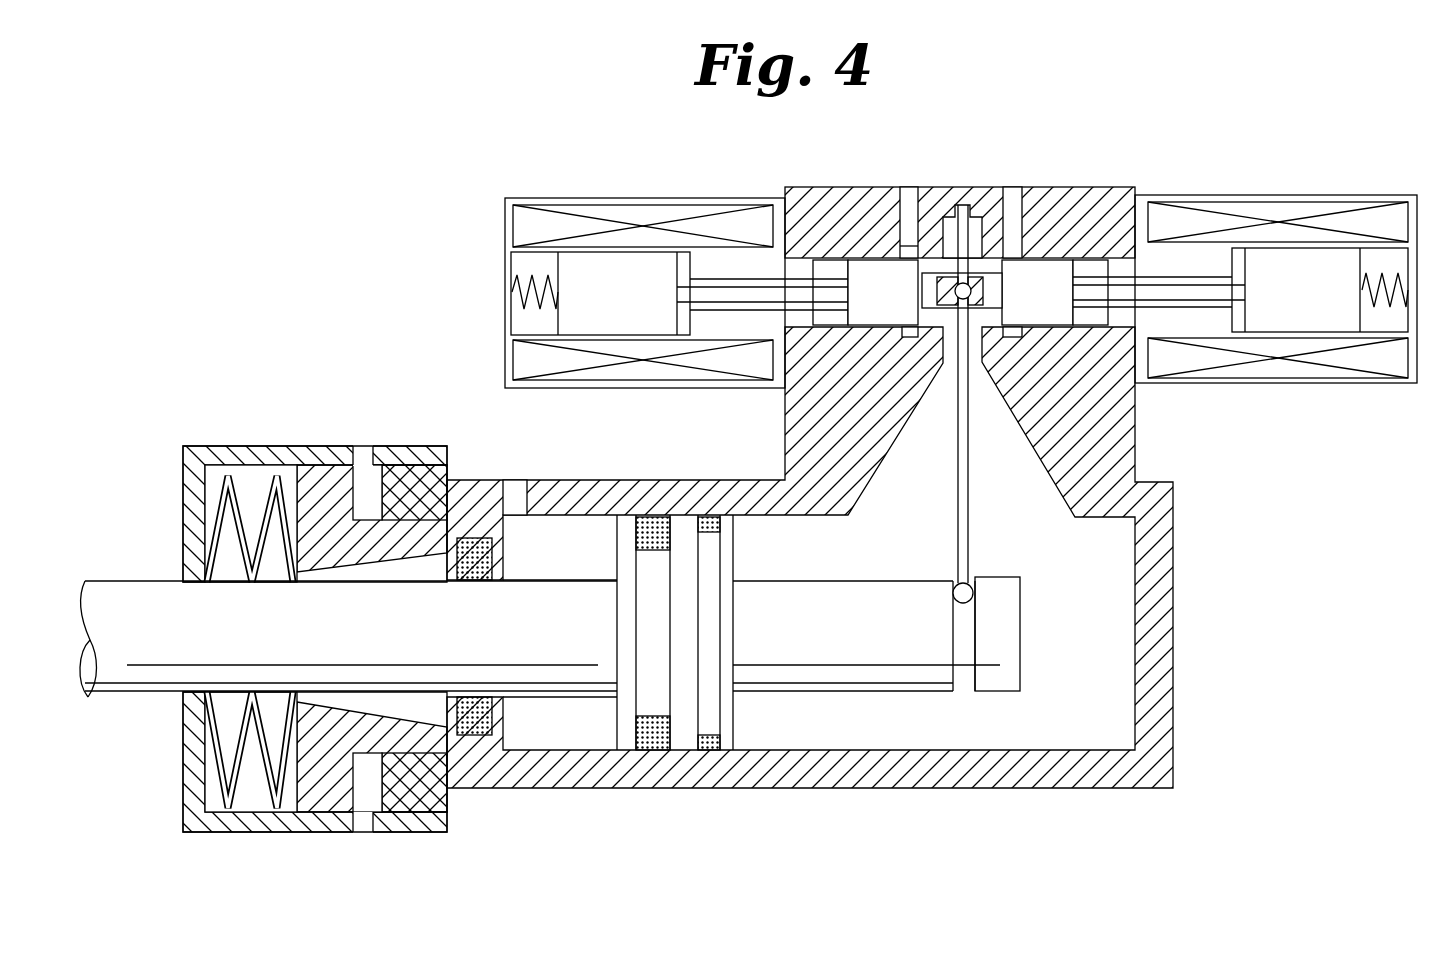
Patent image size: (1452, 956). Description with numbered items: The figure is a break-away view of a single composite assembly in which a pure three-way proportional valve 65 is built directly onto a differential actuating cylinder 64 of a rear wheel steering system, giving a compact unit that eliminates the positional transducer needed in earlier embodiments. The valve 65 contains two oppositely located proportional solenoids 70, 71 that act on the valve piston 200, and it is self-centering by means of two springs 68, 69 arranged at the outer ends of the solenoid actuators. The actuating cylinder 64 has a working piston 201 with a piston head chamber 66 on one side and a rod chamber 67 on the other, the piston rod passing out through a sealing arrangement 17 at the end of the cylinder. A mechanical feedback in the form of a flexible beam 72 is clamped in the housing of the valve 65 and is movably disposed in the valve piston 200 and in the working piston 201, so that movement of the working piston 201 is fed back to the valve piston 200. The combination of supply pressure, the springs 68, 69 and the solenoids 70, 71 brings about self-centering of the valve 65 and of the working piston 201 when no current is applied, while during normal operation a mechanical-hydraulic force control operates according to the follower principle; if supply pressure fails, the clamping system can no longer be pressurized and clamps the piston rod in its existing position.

The spring seal assembly 17 is at (254, 484).
The differential actuating cylinder 64 is at (1177, 528).
The three-way proportional valve 65 is at (1093, 181).
The piston head chamber 66 is at (1118, 712).
The rod chamber 67 is at (559, 540).
The spring 68 is at (514, 310).
The spring 69 is at (1392, 300).
The proportional solenoid 70 is at (641, 212).
The proportional solenoid 71 is at (1247, 208).
The flexible beam 72 is at (972, 524).
The valve piston 200 is at (1050, 318).
The working piston 201 is at (761, 699).